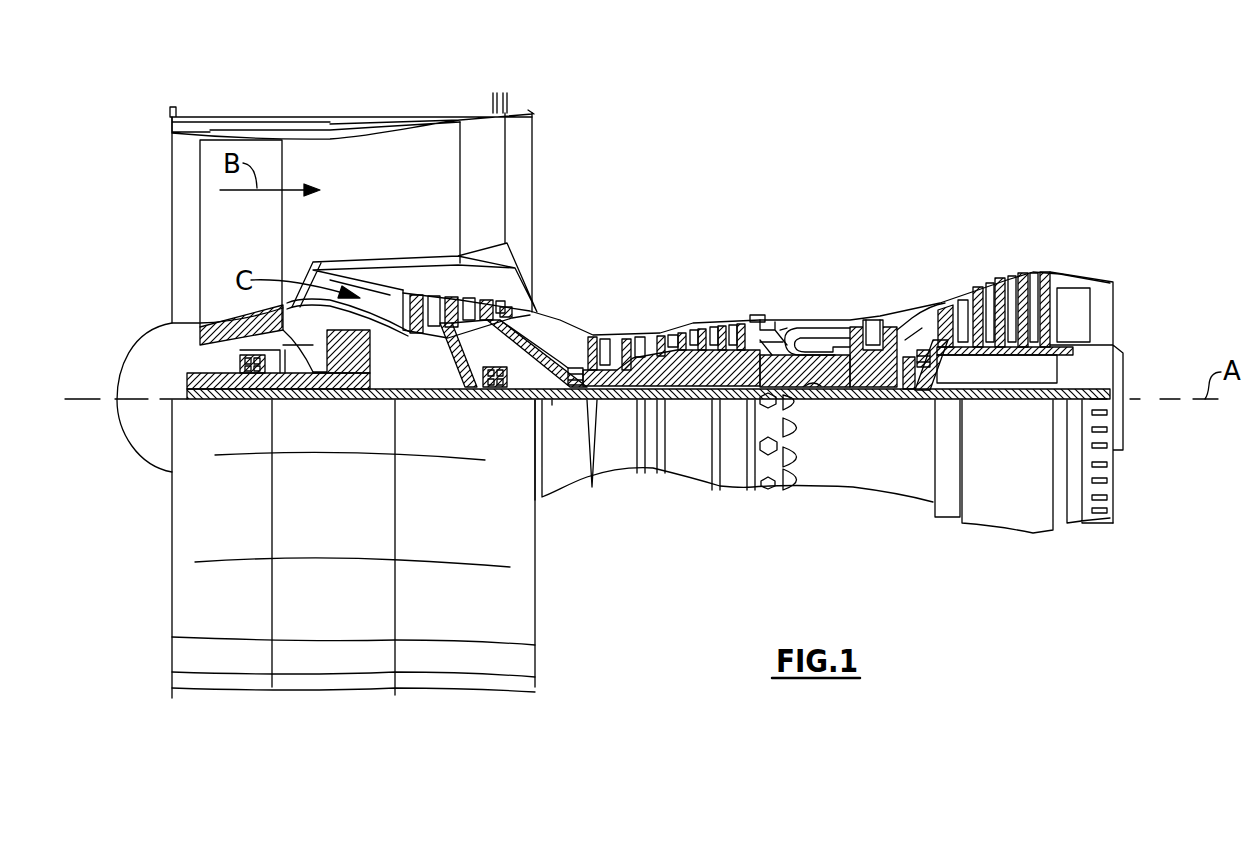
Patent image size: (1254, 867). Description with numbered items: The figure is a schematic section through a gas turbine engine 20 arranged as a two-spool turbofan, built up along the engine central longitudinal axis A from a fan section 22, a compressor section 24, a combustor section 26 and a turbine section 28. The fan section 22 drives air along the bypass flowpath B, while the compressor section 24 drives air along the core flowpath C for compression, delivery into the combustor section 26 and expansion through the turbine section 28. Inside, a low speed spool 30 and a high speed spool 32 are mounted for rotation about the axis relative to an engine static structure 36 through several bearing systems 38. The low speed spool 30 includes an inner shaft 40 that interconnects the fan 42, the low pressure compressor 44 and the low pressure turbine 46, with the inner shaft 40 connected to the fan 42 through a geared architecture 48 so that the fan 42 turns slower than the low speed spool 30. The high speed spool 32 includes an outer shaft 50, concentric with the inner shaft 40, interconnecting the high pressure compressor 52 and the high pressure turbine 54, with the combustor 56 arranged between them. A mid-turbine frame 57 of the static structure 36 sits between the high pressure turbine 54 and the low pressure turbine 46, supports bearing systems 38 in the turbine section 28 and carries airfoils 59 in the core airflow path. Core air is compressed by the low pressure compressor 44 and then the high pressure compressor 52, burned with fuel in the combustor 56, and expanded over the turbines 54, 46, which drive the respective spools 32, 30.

The gas turbine engine 20 is at (820, 162).
The fan section 22 is at (279, 105).
The compressor section 24 is at (587, 300).
The combustor section 26 is at (808, 288).
The turbine section 28 is at (958, 252).
The low speed spool 30 is at (692, 410).
The high speed spool 32 is at (738, 326).
The engine static structure 36 is at (731, 496).
The bearing systems 38 is at (263, 372).
The inner shaft 40 is at (552, 402).
The fan 42 is at (256, 247).
The low pressure compressor section 44 is at (468, 302).
The low pressure turbine section 46 is at (1003, 280).
The geared architecture 48 is at (358, 378).
The outer shaft 50 is at (813, 388).
The high pressure compressor section 52 is at (660, 332).
The high pressure turbine section 54 is at (872, 318).
The combustor 56 is at (807, 337).
The mid-turbine frame 57 is at (922, 297).
The airfoils 59 is at (915, 336).